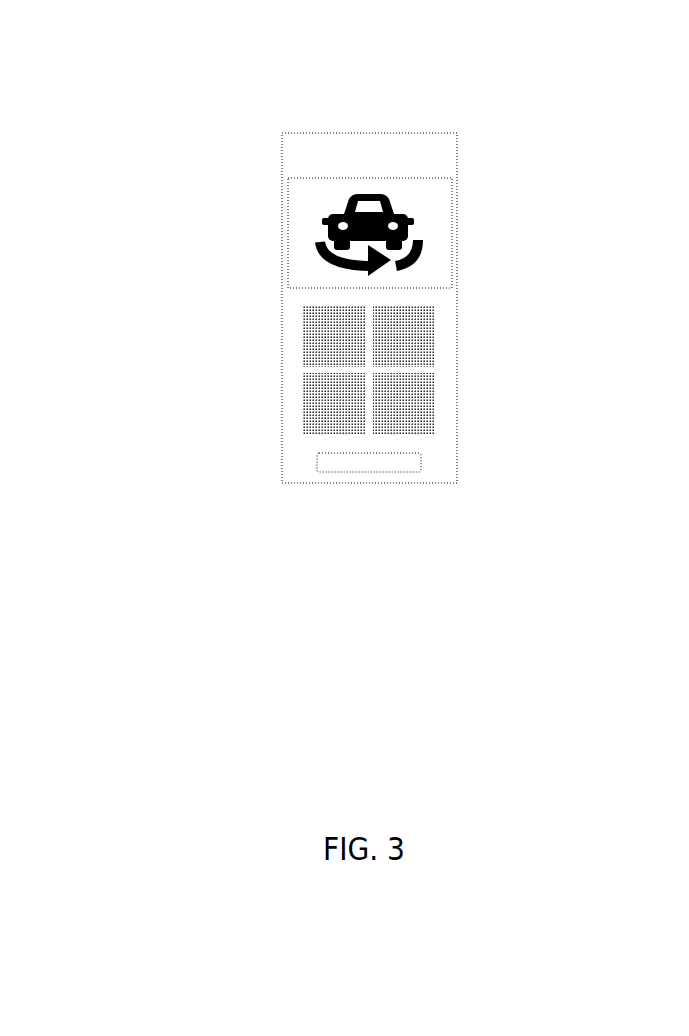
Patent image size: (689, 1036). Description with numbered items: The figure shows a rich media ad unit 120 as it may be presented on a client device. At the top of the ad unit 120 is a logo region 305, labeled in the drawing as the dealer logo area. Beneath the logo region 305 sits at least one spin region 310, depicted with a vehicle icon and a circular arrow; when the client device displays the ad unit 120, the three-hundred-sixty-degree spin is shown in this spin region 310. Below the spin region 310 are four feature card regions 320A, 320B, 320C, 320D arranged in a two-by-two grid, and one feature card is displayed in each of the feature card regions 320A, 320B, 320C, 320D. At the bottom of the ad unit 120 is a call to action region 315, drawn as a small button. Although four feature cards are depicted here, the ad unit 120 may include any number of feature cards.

The ad unit 120 is at (110, 51).
The logo region 305 is at (280, 151).
The spin region 310 is at (290, 243).
The call to action region 315 is at (325, 466).
The feature card region 320A is at (306, 341).
The feature card region 320B is at (537, 342).
The feature card region 320C is at (306, 411).
The feature card region 320D is at (537, 419).